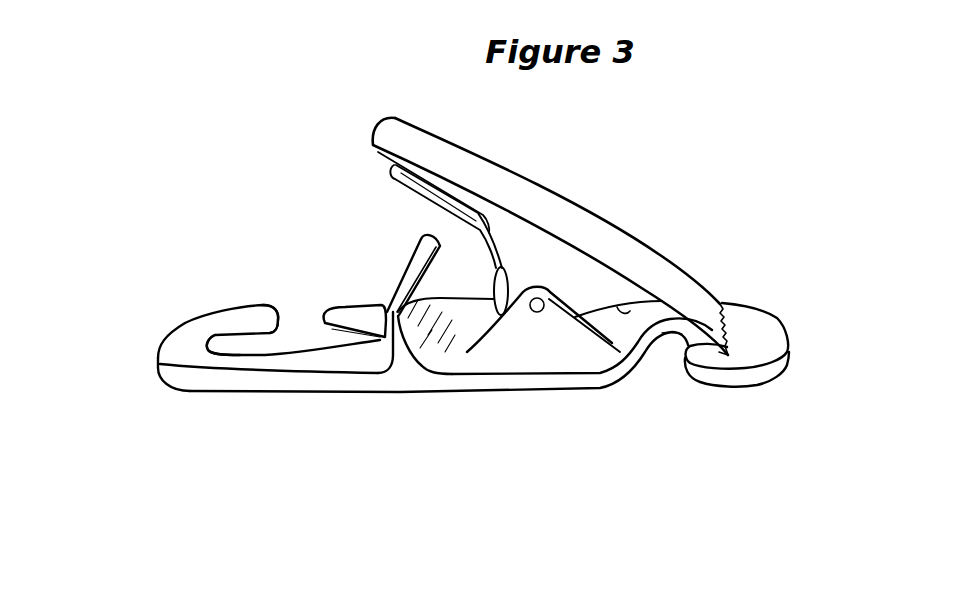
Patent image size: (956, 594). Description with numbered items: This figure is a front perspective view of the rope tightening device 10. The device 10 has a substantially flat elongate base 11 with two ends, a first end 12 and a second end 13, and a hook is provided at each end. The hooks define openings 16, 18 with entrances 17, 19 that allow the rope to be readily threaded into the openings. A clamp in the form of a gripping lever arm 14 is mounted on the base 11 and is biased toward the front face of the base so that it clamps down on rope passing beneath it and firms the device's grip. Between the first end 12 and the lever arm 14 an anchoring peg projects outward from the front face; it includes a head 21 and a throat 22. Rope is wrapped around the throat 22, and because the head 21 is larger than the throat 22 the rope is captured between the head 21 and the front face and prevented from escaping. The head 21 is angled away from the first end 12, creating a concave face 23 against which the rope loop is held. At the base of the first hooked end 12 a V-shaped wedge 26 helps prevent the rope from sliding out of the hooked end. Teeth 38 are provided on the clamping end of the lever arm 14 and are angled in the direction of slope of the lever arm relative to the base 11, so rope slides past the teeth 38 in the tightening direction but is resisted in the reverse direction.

The rope tightening device 10 is at (552, 396).
The base 11 is at (571, 389).
The first end 12 is at (162, 376).
The second end 13 is at (764, 342).
The gripping lever arm 14 is at (592, 228).
The opening 16 is at (240, 345).
The entrance 17 is at (298, 323).
The opening 18 is at (653, 363).
The entrance 19 is at (680, 338).
The head 21 is at (420, 253).
The throat 22 is at (388, 312).
The concave face 23 is at (427, 320).
The V-shaped wedge 26 is at (345, 342).
The teeth 38 is at (722, 321).